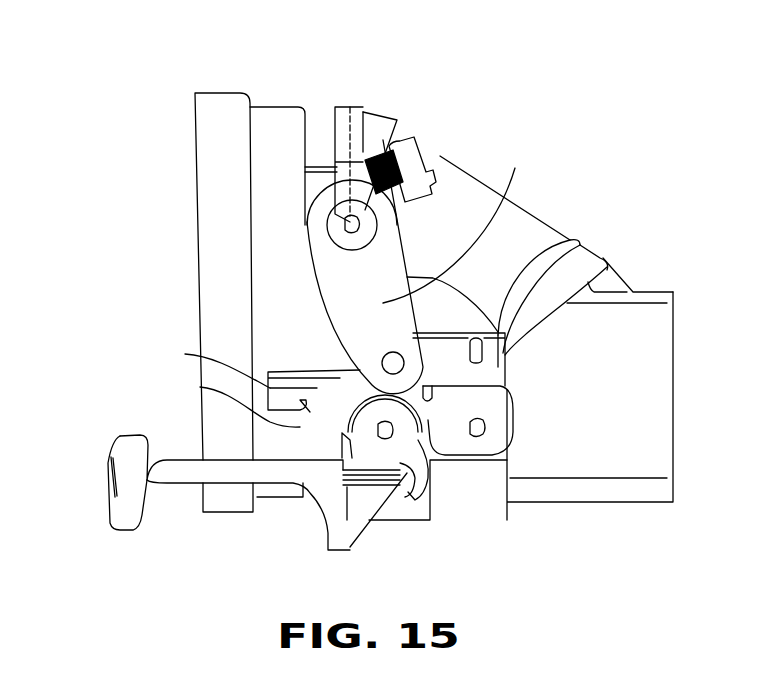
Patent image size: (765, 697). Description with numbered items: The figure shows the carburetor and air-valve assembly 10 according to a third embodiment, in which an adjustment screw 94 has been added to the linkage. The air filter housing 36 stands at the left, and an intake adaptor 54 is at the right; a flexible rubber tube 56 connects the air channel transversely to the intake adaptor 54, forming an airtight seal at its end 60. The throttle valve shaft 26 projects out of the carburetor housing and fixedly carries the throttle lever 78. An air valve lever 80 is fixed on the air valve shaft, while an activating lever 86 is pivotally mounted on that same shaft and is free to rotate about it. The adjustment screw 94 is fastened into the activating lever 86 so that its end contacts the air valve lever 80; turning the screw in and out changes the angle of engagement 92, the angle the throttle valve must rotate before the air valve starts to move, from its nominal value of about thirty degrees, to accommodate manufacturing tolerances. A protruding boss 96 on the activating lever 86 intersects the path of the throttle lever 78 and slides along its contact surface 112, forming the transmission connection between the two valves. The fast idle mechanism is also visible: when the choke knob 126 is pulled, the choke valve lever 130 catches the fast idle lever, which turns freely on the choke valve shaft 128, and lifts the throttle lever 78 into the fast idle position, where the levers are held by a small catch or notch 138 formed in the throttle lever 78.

The carburetor and air-valve assembly 10 is at (471, 95).
The throttle valve shaft 26 is at (488, 427).
The air filter housing 36 is at (215, 93).
The intake adaptor 54 is at (645, 408).
The flexible rubber tube 56 is at (547, 218).
The end of rubber tube 60 is at (606, 262).
The throttle lever 78 is at (185, 354).
The air valve lever 80 is at (340, 173).
The activating lever 86 is at (515, 168).
The angle of engagement 92 is at (372, 113).
The adjustment screw 94 is at (430, 173).
The protruding boss 96 is at (404, 361).
The contact surface 112 is at (312, 368).
The choke knob 126 is at (120, 532).
The choke valve shaft 128 is at (376, 430).
The choke valve lever 130 is at (430, 520).
The catch or notch 138 is at (200, 387).